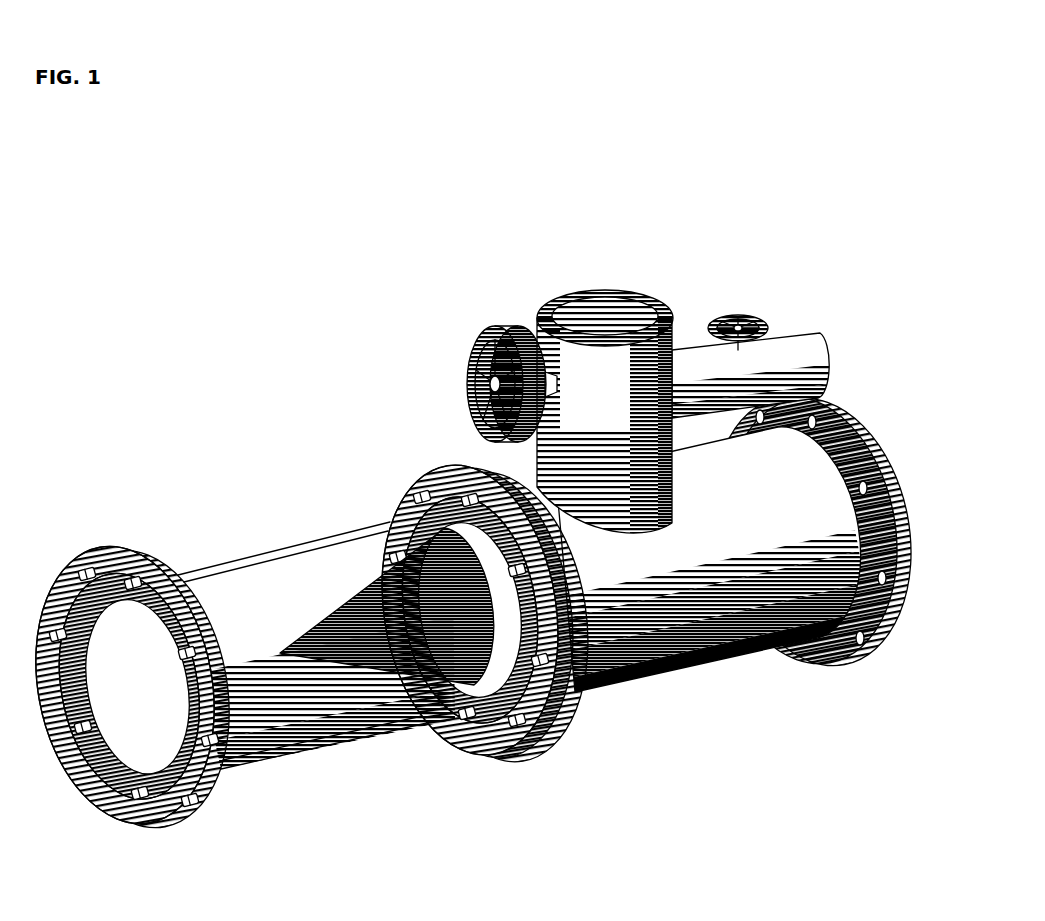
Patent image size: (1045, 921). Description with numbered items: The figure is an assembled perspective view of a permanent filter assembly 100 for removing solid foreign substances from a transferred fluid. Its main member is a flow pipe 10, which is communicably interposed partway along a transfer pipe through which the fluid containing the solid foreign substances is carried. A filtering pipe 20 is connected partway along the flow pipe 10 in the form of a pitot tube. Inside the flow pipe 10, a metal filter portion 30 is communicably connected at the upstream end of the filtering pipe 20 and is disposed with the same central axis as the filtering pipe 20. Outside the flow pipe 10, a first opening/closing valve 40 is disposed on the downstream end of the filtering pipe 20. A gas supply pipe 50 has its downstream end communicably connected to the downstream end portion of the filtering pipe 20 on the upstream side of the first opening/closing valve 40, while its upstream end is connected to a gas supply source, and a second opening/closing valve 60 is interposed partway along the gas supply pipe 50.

The permanent filter assembly 100 is at (744, 211).
The flow pipe 10 is at (270, 766).
The filtering pipe 20 is at (632, 510).
The metal filter portion 30 is at (360, 658).
The first opening/closing valve 40 is at (469, 372).
The gas supply pipe 50 is at (800, 343).
The second opening/closing valve 60 is at (738, 316).